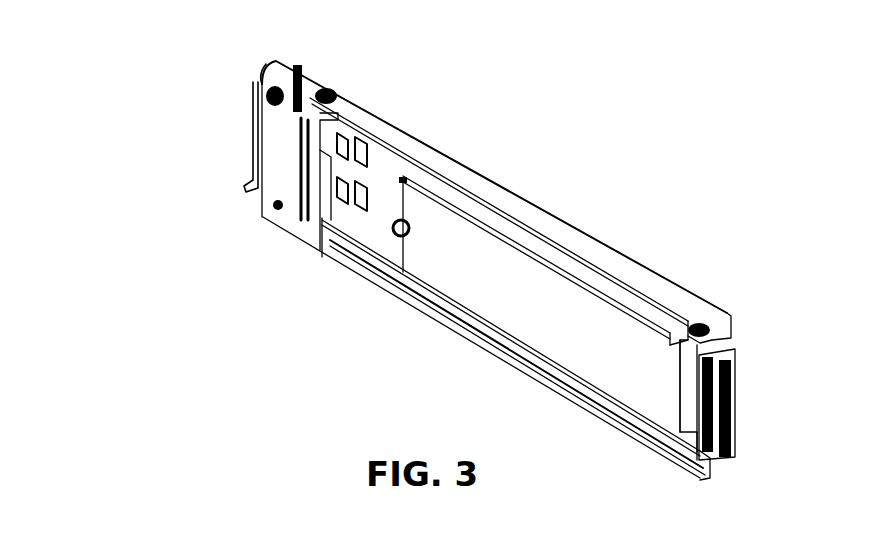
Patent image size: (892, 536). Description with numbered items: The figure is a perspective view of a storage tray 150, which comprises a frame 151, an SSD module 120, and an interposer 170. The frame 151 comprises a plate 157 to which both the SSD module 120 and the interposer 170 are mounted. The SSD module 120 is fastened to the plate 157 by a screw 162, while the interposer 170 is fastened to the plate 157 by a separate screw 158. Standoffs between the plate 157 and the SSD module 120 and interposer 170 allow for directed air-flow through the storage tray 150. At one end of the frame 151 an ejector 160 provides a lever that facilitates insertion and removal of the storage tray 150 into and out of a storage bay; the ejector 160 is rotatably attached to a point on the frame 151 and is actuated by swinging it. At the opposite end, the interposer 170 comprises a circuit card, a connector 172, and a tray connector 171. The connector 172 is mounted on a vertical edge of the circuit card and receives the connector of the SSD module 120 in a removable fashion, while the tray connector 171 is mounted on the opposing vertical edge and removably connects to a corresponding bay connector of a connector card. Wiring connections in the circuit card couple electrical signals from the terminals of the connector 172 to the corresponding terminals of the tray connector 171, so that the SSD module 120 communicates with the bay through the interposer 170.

The storage tray 150 is at (158, 90).
The frame 151 is at (512, 198).
The plate 157 is at (384, 160).
The screw 158 is at (693, 322).
The ejector 160 is at (253, 113).
The screw 162 is at (392, 220).
The SSD module 120 is at (478, 292).
The interposer 170 is at (737, 416).
The tray connector 171 is at (733, 378).
The connector 172 is at (680, 413).